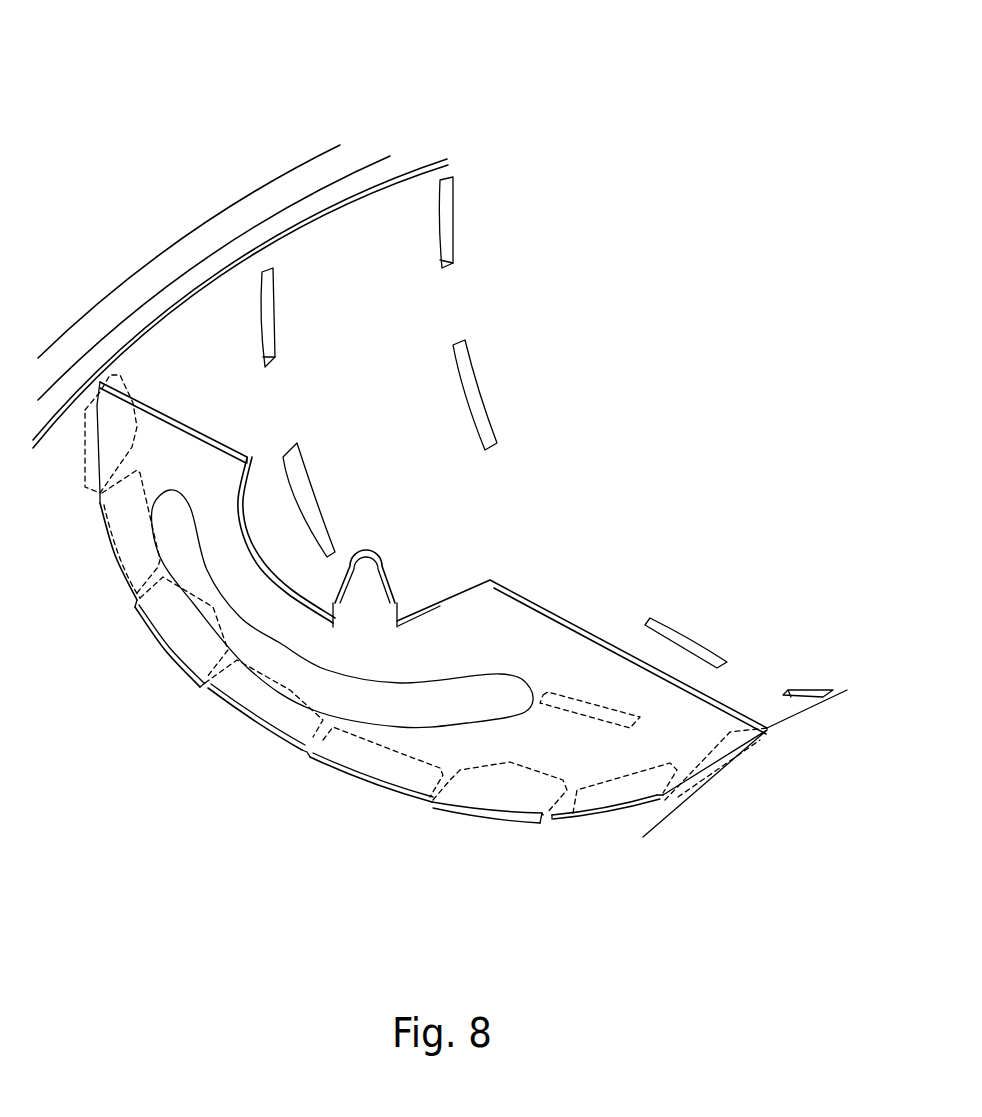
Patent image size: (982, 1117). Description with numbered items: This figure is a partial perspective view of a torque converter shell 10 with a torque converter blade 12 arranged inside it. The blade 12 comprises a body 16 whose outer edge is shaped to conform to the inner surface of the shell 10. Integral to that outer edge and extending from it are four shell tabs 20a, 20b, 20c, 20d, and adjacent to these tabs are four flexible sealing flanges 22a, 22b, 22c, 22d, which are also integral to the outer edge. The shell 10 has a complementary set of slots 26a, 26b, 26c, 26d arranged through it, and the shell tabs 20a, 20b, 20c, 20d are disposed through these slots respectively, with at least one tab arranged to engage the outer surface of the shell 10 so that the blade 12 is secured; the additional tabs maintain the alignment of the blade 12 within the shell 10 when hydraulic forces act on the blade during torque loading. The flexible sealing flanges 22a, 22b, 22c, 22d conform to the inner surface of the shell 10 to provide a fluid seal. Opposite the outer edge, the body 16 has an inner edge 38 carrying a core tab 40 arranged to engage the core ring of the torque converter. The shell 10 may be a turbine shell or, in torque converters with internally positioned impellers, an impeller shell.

The torque converter shell 10 is at (212, 130).
The torque converter blade 12 is at (533, 577).
The body 16 is at (530, 638).
The shell tab 20a is at (730, 772).
The shell tab 20b is at (482, 795).
The shell tab 20c is at (190, 653).
The shell tab 20d is at (120, 438).
The flexible sealing flange 22a is at (597, 798).
The flexible sealing flange 22b is at (360, 757).
The flexible sealing flange 22c is at (272, 708).
The flexible sealing flange 22d is at (137, 557).
The slot 26a is at (822, 690).
The slot 26b is at (675, 632).
The slot 26c is at (473, 402).
The slot 26d is at (443, 225).
The inner edge 38 is at (242, 500).
The core tab 40 is at (365, 578).